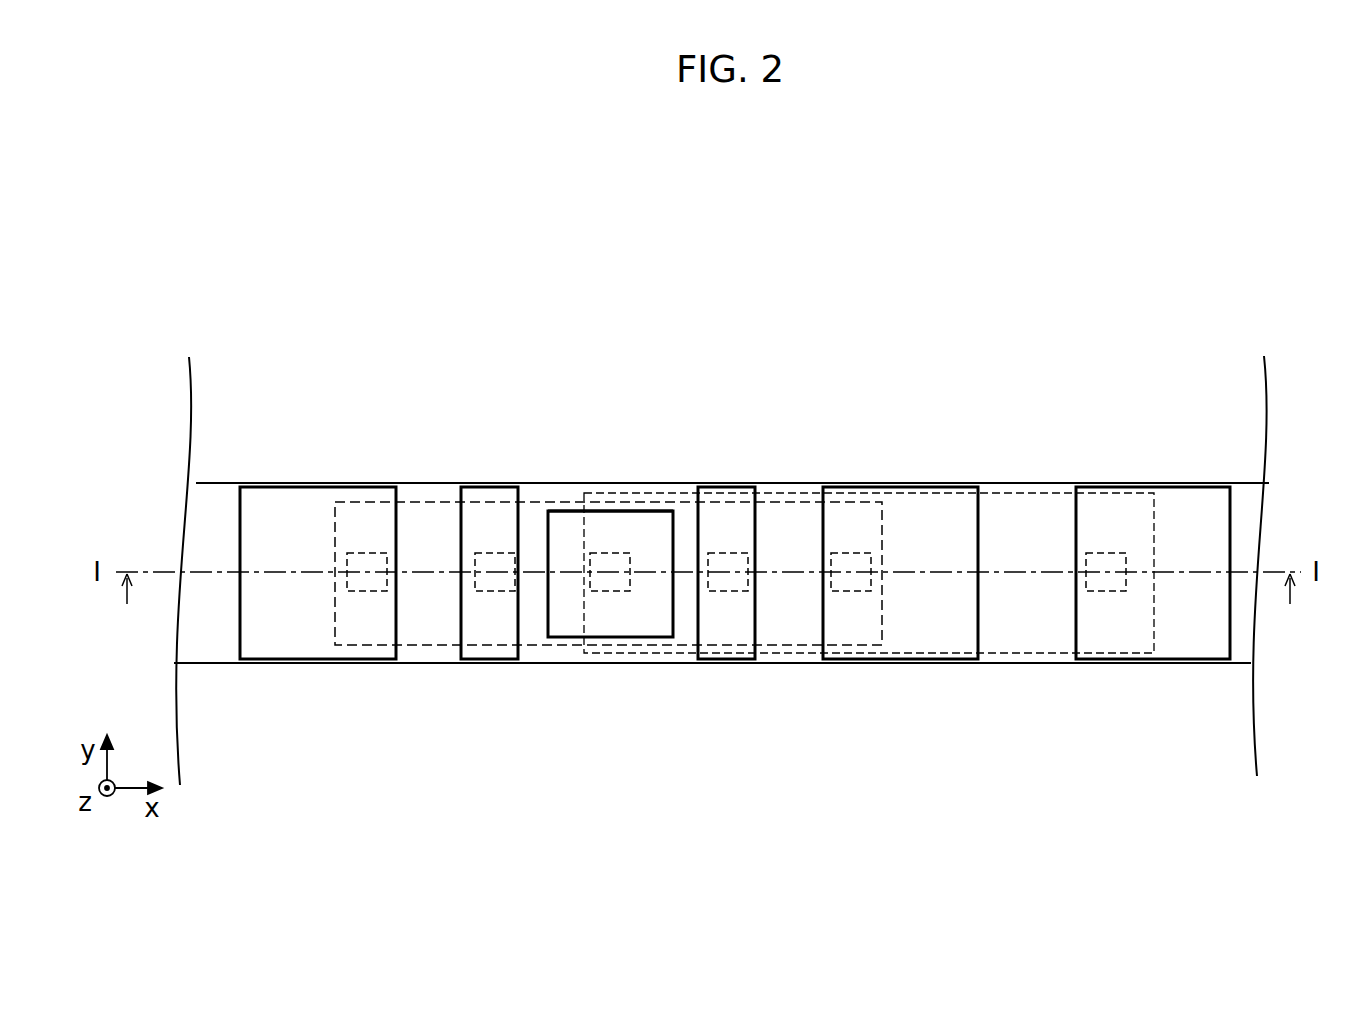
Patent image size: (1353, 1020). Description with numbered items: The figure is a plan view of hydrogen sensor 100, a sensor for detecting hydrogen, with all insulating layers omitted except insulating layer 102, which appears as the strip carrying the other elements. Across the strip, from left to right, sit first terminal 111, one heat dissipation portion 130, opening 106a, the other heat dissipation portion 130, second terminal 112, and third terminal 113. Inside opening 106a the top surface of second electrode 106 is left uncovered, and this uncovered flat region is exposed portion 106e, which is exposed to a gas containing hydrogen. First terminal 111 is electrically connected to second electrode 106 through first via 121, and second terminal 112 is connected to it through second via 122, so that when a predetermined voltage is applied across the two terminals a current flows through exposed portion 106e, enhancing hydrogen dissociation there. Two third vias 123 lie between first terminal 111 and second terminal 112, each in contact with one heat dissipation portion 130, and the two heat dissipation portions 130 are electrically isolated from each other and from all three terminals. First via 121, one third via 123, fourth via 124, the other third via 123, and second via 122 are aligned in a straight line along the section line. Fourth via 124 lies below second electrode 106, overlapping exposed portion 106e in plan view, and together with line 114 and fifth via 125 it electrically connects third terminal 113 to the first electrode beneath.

The hydrogen sensor 100 is at (261, 360).
The insulating layer 102 is at (225, 481).
The first terminal 111 is at (290, 512).
The first via 121 is at (363, 553).
The second electrode 106 is at (425, 502).
The heat dissipation portion 130 is at (485, 515).
The third via 123 is at (495, 553).
The opening 106a is at (568, 510).
The exposed portion 106e is at (618, 535).
The fourth via 124 is at (612, 592).
The line 114 is at (998, 493).
The second via 122 is at (847, 553).
The second terminal 112 is at (918, 530).
The fifth via 125 is at (1100, 553).
The third terminal 113 is at (1173, 532).